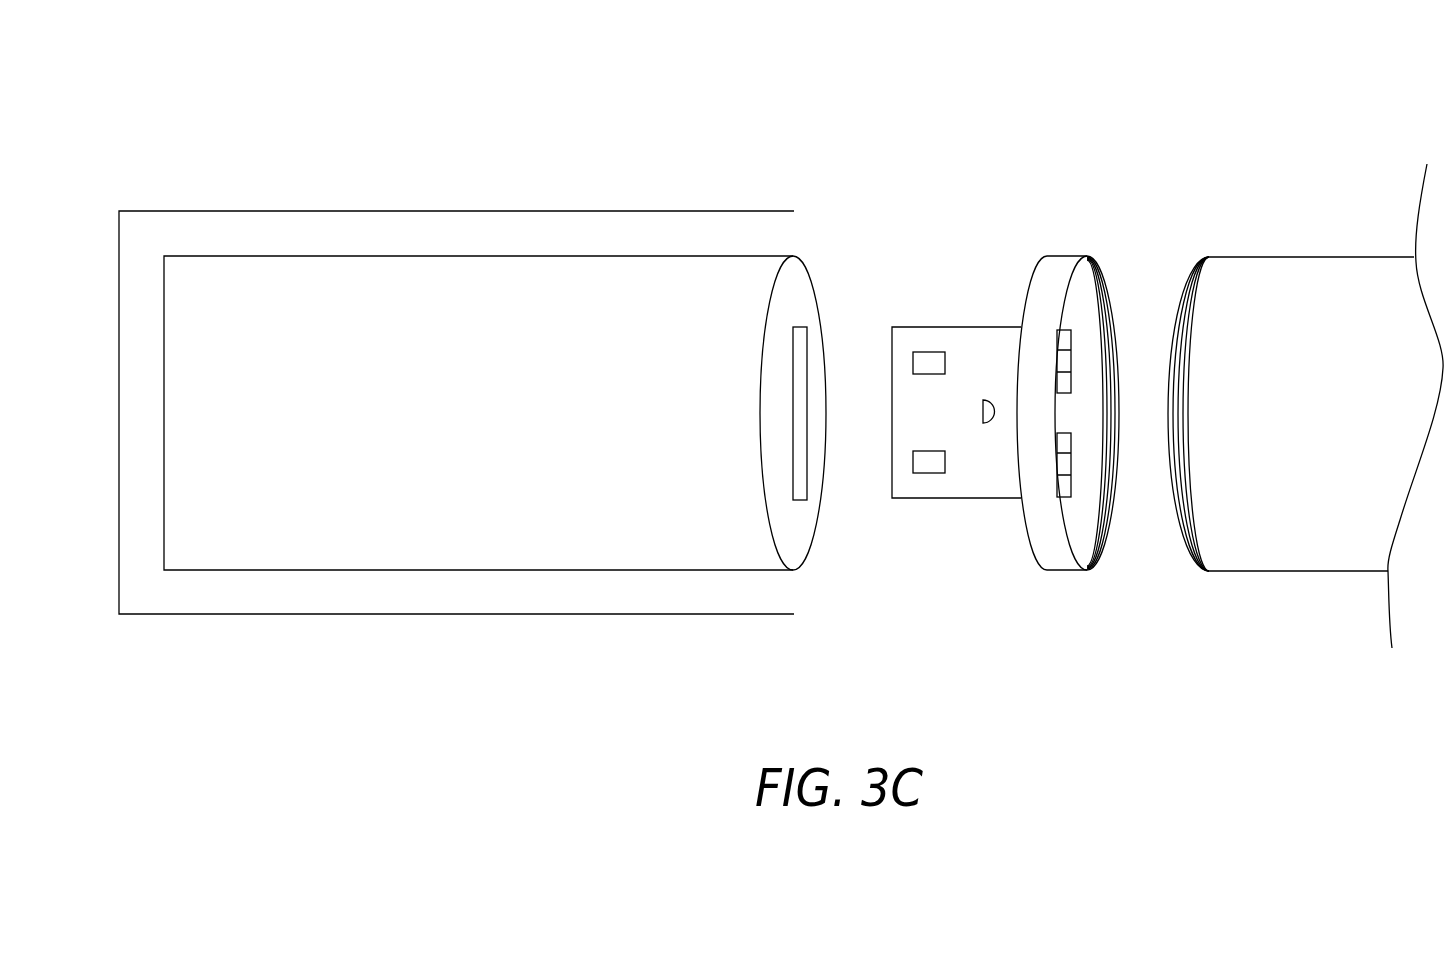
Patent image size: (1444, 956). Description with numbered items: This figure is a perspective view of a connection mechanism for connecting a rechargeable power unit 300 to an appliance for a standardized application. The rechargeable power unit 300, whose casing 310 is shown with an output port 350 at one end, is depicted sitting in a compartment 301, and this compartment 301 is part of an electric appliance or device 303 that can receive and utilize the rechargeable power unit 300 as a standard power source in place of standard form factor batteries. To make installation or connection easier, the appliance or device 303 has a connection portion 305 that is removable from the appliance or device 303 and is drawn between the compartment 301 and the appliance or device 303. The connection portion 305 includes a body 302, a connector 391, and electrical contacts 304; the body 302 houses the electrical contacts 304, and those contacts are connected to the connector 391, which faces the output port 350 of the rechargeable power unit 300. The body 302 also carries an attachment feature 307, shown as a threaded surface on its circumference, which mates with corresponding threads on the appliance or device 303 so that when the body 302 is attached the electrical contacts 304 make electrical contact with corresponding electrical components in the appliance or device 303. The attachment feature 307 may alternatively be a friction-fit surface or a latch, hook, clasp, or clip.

The rechargeable power unit 300 is at (577, 107).
The compartment 301 is at (355, 211).
The body 302 is at (1063, 257).
The appliance or device 303 is at (1278, 257).
The electrical contacts 304 is at (1065, 463).
The connection portion 305 is at (1042, 218).
The attachment feature 307 is at (1107, 288).
The casing 310 is at (502, 568).
The output port 350 is at (797, 502).
The connector 391 is at (969, 477).